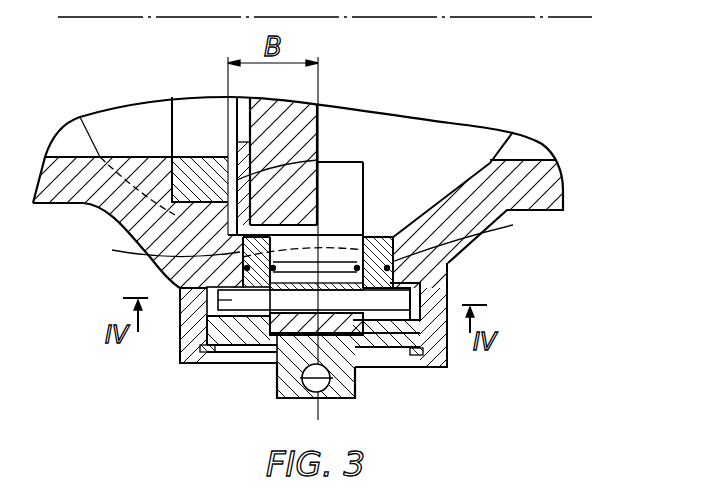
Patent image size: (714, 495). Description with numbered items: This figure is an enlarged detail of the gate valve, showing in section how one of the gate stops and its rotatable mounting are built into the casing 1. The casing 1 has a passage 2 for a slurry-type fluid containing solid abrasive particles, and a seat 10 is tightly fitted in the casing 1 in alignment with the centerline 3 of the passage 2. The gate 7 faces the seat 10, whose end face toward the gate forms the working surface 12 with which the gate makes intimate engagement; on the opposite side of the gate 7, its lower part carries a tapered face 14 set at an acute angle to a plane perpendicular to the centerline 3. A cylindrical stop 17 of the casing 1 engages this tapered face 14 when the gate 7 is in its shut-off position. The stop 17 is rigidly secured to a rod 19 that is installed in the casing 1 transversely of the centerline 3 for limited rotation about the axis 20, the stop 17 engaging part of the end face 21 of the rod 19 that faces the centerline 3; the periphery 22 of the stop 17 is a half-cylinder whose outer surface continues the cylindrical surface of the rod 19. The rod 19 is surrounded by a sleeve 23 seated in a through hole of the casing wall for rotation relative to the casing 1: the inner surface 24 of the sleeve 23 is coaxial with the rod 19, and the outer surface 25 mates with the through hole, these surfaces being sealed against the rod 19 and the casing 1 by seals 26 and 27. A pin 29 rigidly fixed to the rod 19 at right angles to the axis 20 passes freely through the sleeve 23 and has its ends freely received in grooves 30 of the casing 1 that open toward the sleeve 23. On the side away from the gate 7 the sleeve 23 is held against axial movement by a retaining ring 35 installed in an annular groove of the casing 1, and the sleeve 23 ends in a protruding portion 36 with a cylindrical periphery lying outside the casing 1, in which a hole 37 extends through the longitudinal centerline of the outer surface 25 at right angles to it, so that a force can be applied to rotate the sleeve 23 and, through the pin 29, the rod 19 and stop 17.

The casing 1 is at (445, 365).
The passage 2 is at (518, 152).
The centerline 3 is at (530, 19).
The gate 7 is at (290, 110).
The seat 10 is at (200, 173).
The working surface 12 is at (318, 160).
The tapered face 14 is at (318, 113).
The stop 17 is at (348, 170).
The rod 19 is at (367, 236).
The axis 20 is at (318, 413).
The end face 21 is at (365, 213).
The periphery 22 is at (365, 163).
The sleeve 23 is at (448, 263).
The inner surface 24 is at (300, 228).
The outer surface 25 is at (447, 287).
The seal 26 is at (487, 227).
The seal 27 is at (164, 252).
The pin 29 is at (217, 300).
The groove 30 is at (180, 288).
The retaining ring 35 is at (410, 356).
The protruding portion 36 is at (293, 387).
The hole 37 is at (293, 400).